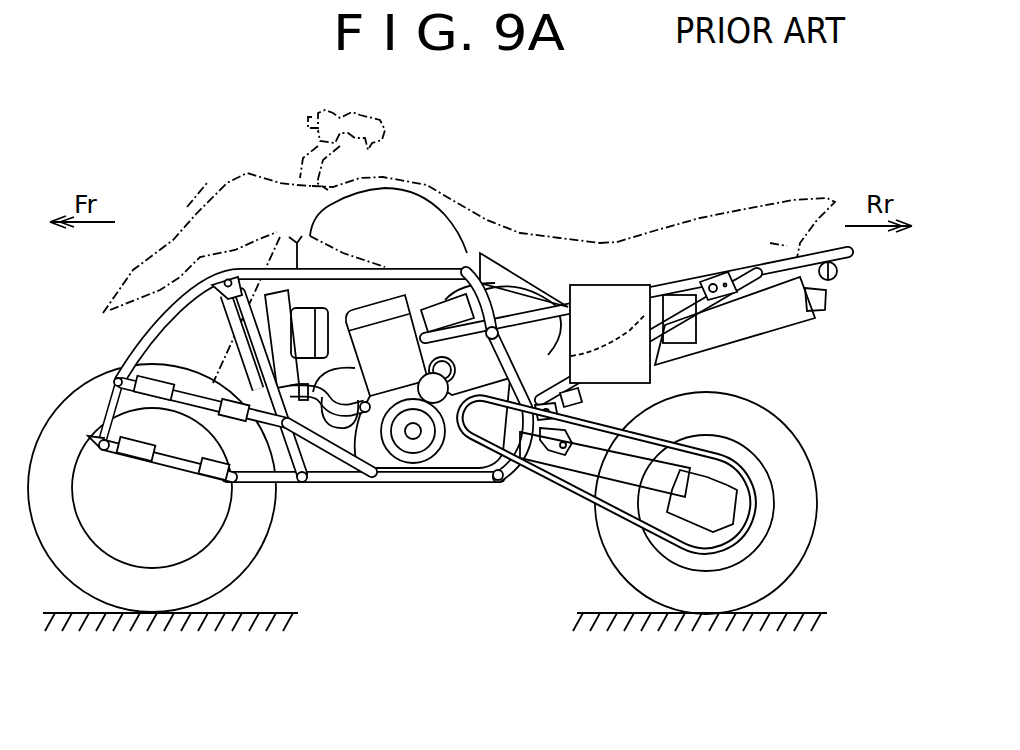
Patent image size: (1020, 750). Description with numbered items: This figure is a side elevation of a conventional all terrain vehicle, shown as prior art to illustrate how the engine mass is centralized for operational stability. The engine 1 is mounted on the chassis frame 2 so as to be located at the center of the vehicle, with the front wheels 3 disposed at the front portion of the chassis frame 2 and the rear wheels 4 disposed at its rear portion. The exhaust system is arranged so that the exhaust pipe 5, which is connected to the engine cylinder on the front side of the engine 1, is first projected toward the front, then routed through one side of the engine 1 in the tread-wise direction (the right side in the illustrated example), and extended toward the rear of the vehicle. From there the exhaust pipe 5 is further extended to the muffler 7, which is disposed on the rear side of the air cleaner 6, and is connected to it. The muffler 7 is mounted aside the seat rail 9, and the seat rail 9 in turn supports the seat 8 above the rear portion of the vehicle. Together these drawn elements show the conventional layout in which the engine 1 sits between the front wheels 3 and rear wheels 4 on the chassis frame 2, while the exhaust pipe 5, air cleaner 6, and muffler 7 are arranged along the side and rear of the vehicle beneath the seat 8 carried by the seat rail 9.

The engine 1 is at (385, 383).
The chassis frame 2 is at (465, 487).
The front wheels 3 is at (62, 422).
The rear wheels 4 is at (807, 548).
The exhaust pipe 5 is at (468, 345).
The air cleaner 6 is at (570, 284).
The muffler 7 is at (783, 330).
The seat 8 is at (727, 210).
The seat rail 9 is at (670, 283).